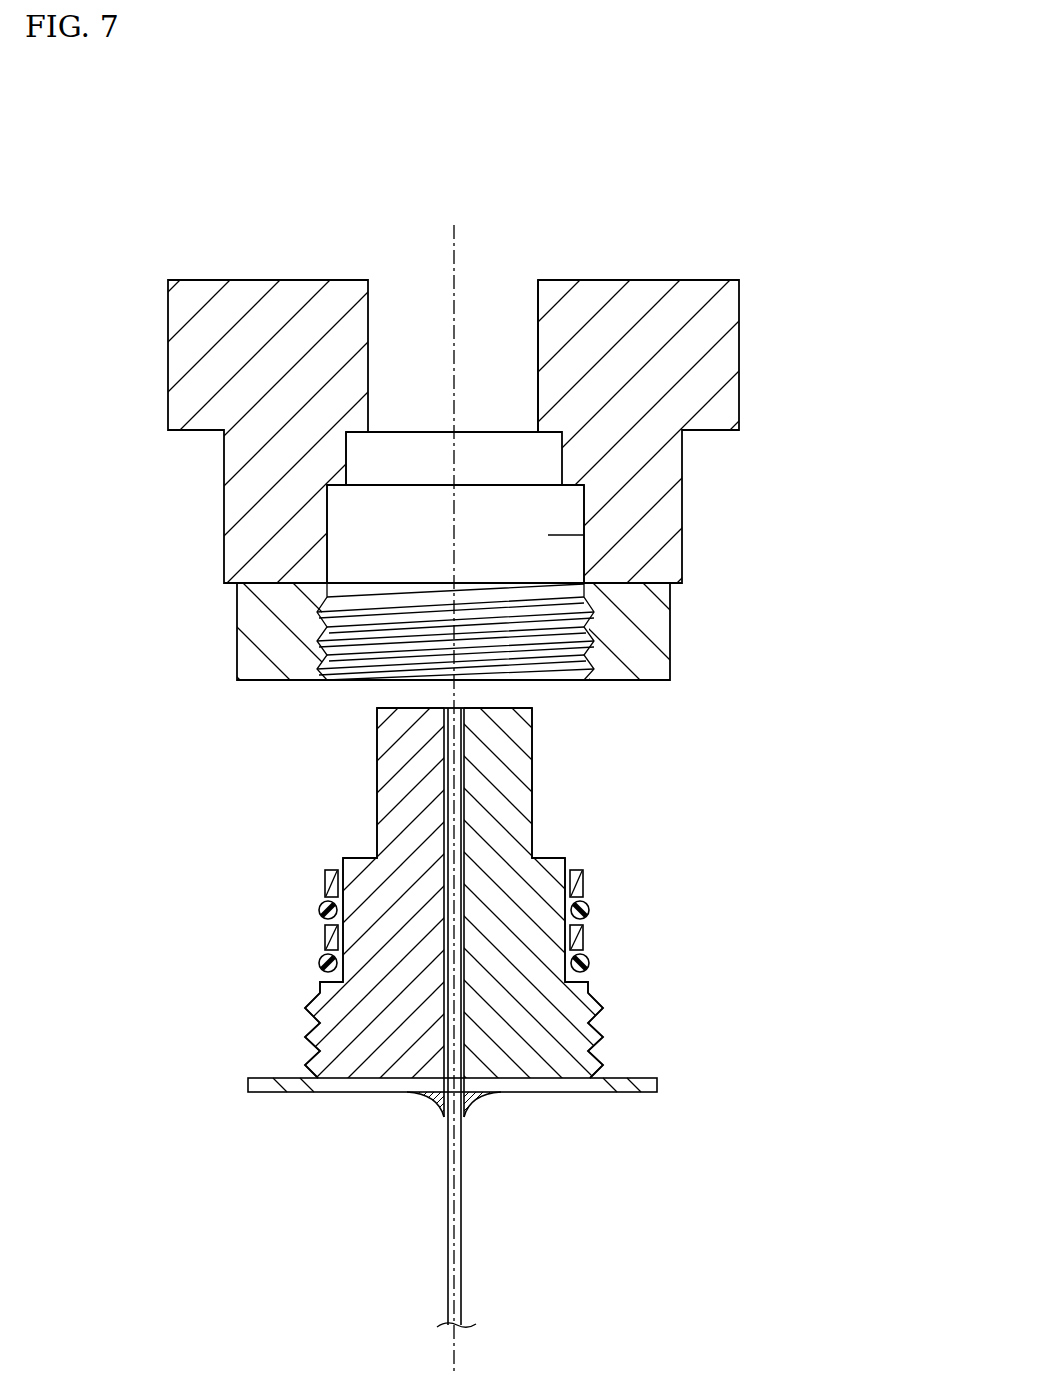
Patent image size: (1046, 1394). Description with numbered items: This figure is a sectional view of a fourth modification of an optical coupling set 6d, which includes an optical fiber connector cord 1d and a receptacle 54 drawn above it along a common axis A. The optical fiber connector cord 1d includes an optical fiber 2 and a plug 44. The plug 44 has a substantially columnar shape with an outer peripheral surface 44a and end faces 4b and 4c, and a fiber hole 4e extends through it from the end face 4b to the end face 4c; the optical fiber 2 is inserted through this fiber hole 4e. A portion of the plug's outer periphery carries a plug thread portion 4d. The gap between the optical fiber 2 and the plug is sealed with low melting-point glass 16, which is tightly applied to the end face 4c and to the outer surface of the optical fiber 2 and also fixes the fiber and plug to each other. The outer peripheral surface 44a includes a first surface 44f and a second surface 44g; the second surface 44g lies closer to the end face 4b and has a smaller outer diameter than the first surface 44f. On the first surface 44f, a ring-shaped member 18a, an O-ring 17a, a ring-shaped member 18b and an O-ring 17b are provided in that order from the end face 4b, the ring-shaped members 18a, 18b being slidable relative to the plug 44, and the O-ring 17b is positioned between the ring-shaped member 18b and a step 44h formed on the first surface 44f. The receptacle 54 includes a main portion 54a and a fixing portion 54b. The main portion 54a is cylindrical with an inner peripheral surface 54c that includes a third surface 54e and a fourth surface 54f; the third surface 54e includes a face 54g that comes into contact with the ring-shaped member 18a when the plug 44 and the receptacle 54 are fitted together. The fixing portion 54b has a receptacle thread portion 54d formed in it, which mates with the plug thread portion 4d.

The optical coupling set 6d is at (744, 197).
The axis A is at (454, 262).
The receptacle 54 is at (840, 518).
The main portion 54a is at (684, 501).
The fixing portion 54b is at (672, 645).
The inner peripheral surface 54c is at (518, 574).
The receptacle thread portion 54d is at (414, 607).
The third surface 54e is at (548, 478).
The fourth surface 54f is at (538, 380).
The face 54g is at (334, 488).
The end face 4b is at (518, 702).
The fiber hole 4e is at (463, 777).
The plug 44 is at (575, 1093).
The outer peripheral surface 44a is at (722, 765).
The second surface 44g is at (377, 797).
The first surface 44f is at (330, 860).
The step 44h is at (320, 978).
The plug thread portion 4d is at (302, 993).
The ring-shaped member 18a is at (325, 882).
The O-ring 17a is at (319, 910).
The ring-shaped member 18b is at (325, 940).
The O-ring 17b is at (319, 963).
The end face 4c is at (338, 1093).
The low melting-point glass 16 is at (434, 1110).
The optical fiber 2 is at (463, 1218).
The optical fiber connector cord 1d is at (699, 1251).